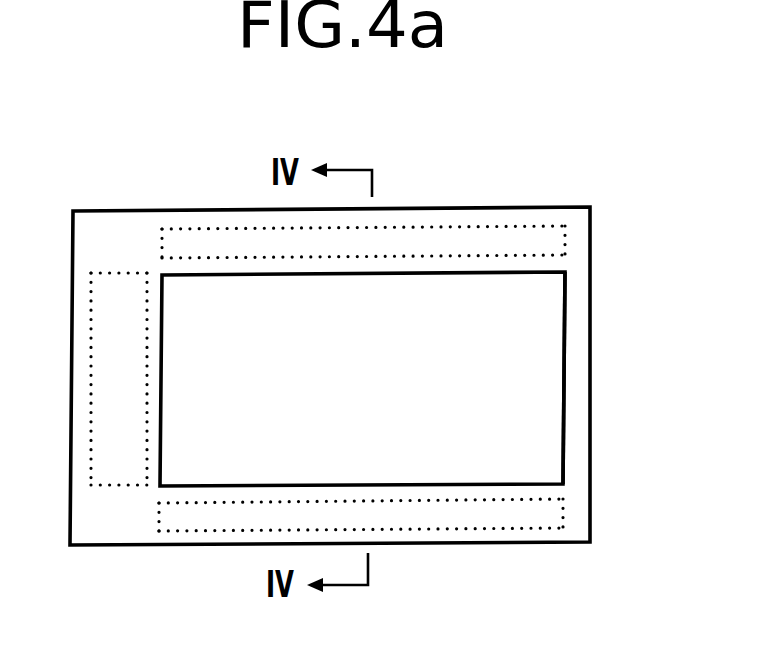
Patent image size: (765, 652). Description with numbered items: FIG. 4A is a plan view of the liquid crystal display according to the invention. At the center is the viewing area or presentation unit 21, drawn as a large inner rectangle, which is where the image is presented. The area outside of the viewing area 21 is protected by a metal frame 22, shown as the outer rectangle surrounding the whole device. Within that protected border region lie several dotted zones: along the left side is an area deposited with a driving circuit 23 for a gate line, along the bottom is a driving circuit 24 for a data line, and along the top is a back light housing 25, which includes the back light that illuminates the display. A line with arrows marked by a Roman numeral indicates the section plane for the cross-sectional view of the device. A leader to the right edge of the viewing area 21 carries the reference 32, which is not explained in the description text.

The viewing area 21 is at (550, 469).
The metal frame 22 is at (582, 414).
The driving circuit for a gate line 23 is at (117, 438).
The driving circuit for a data line 24 is at (197, 519).
The back light housing 25 is at (480, 228).
The panel edge 32 is at (565, 272).